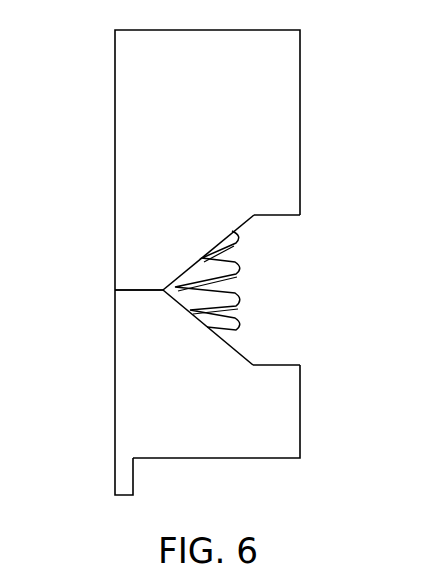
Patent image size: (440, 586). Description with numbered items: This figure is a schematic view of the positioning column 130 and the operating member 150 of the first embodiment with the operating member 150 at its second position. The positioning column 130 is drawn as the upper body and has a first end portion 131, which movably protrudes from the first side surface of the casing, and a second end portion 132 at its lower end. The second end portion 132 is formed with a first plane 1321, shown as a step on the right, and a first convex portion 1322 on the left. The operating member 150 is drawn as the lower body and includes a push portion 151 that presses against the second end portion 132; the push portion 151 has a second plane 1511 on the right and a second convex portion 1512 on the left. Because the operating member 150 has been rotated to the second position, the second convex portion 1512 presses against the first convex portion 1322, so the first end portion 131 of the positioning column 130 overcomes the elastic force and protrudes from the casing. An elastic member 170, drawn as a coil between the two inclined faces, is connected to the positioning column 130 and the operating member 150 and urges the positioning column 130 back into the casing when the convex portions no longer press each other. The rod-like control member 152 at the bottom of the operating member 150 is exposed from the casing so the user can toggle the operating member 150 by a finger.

The positioning column 130 is at (198, 160).
The first end portion 131 is at (148, 45).
The second end portion 132 is at (148, 204).
The first plane 1321 is at (278, 217).
The first convex portion 1322 is at (127, 286).
The operating member 150 is at (204, 392).
The push portion 151 is at (207, 353).
The second plane 1511 is at (292, 363).
The second convex portion 1512 is at (137, 295).
The control member 152 is at (121, 478).
The elastic member 170 is at (240, 290).